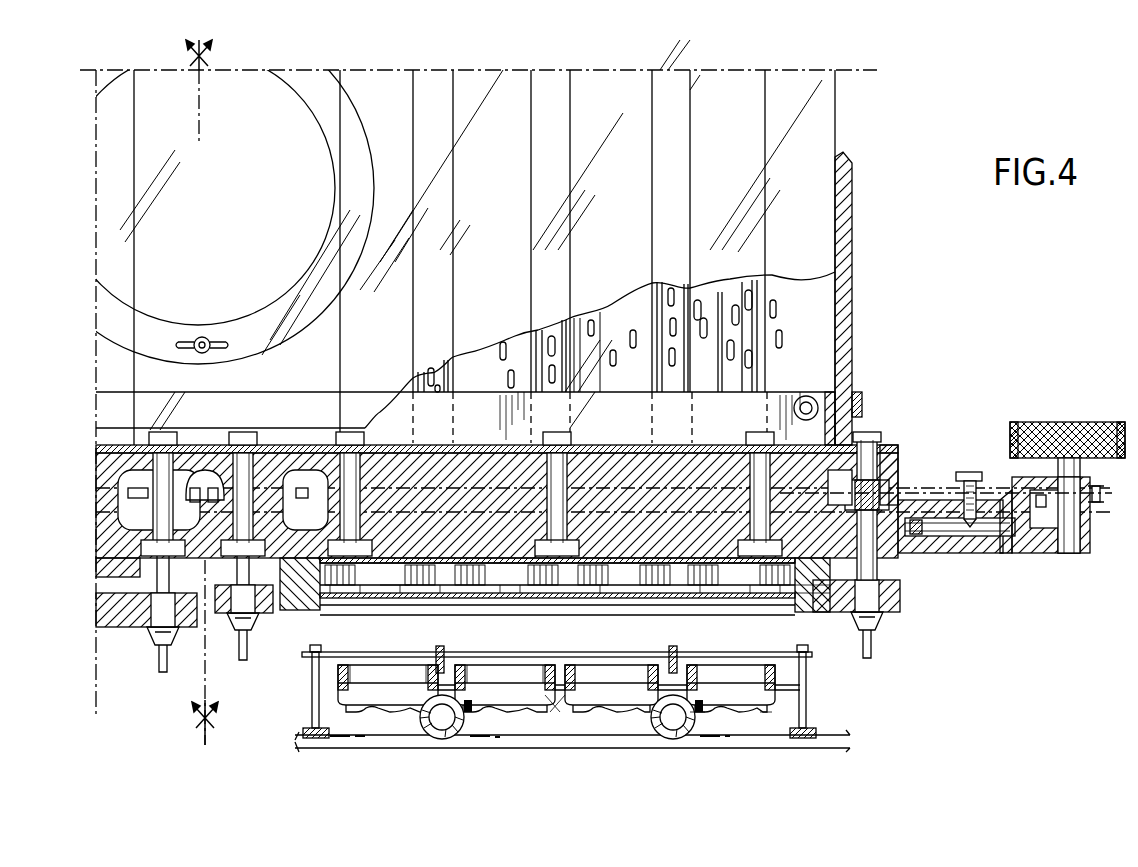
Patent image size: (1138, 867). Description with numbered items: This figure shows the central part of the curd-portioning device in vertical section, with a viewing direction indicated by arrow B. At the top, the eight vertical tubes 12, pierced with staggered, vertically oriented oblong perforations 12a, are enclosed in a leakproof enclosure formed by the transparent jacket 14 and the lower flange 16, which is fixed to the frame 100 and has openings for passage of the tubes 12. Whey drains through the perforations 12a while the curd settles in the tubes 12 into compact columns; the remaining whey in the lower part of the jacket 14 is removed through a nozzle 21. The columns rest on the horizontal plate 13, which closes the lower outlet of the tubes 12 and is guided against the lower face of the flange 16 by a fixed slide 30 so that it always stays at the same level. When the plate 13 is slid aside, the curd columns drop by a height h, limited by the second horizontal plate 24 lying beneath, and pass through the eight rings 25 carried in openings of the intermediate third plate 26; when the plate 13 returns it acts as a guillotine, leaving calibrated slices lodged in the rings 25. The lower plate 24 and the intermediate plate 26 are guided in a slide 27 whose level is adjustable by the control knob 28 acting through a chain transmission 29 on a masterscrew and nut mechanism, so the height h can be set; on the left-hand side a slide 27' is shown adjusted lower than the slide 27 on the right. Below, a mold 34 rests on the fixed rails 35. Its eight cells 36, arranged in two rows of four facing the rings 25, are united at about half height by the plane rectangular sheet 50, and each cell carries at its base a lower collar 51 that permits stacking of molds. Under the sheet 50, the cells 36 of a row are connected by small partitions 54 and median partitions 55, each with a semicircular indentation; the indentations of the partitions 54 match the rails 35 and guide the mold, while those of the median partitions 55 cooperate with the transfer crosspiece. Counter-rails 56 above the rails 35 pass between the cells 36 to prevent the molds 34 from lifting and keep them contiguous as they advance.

The tubes 12 is at (712, 320).
The oblong perforations 12a is at (510, 360).
The horizontal plate 13 is at (634, 556).
The transparent jacket 14 is at (828, 184).
The lower flange 16 is at (888, 472).
The nozzle 21 is at (673, 533).
The second horizontal plate 24 is at (712, 600).
The rings 25 is at (452, 575).
The third plate 26 is at (800, 593).
The slide 27 is at (571, 608).
The slide 27' is at (146, 614).
The control knob 28 is at (1042, 432).
The chain transmission 29 is at (906, 492).
The fixed slide 30 is at (860, 570).
The mold 34 is at (778, 698).
The fixed rails 35 is at (447, 725).
The cells 36 is at (377, 674).
The sheet 50 is at (560, 685).
The lower collars 51 is at (742, 715).
The small partitions 54 is at (464, 722).
The median partitions 55 is at (556, 700).
The counter-rails 56 is at (438, 652).
The frame 100 is at (362, 745).
The height of fall h is at (290, 545).
The view direction B is at (880, 404).